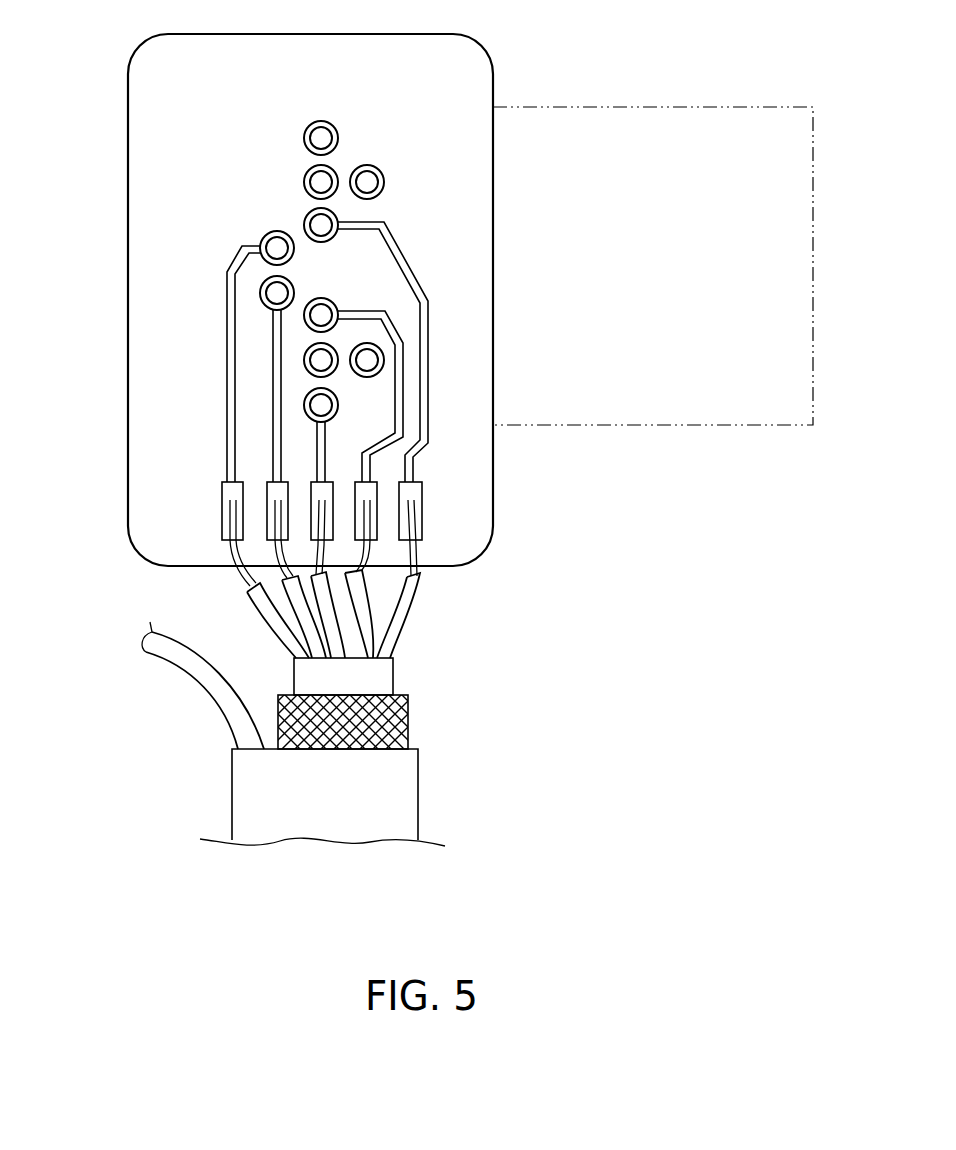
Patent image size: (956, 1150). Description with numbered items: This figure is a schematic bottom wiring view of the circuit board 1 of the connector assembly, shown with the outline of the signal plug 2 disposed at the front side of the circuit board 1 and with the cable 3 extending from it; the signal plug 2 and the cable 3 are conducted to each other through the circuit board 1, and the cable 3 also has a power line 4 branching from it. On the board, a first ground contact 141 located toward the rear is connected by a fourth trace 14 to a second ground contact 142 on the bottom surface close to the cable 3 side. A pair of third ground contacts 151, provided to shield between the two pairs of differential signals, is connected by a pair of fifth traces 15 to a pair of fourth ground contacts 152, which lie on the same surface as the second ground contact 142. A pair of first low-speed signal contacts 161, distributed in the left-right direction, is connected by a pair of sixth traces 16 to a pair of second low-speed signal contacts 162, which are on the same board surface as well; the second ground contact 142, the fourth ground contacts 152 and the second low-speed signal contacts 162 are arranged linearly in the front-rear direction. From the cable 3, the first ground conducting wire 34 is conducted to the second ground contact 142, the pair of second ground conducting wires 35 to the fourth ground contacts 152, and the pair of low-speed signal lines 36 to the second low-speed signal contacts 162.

The circuit board 1 is at (124, 104).
The signal plug 2 is at (695, 107).
The cable 3 is at (230, 777).
The power line 4 is at (212, 697).
The fourth trace 14 is at (322, 452).
The first ground contact 141 is at (312, 413).
The second ground contact 142 is at (320, 494).
The fifth traces 15 is at (427, 343).
The third ground contacts 151 is at (330, 235).
The fourth ground contacts 152 is at (413, 497).
The sixth traces 16 is at (233, 325).
The first low-speed signal contacts 161 is at (272, 240).
The second low-speed signal contacts 162 is at (228, 492).
The first ground conducting wire 34 is at (343, 631).
The second ground conducting wires 35 is at (413, 590).
The low-speed signal lines 36 is at (292, 593).